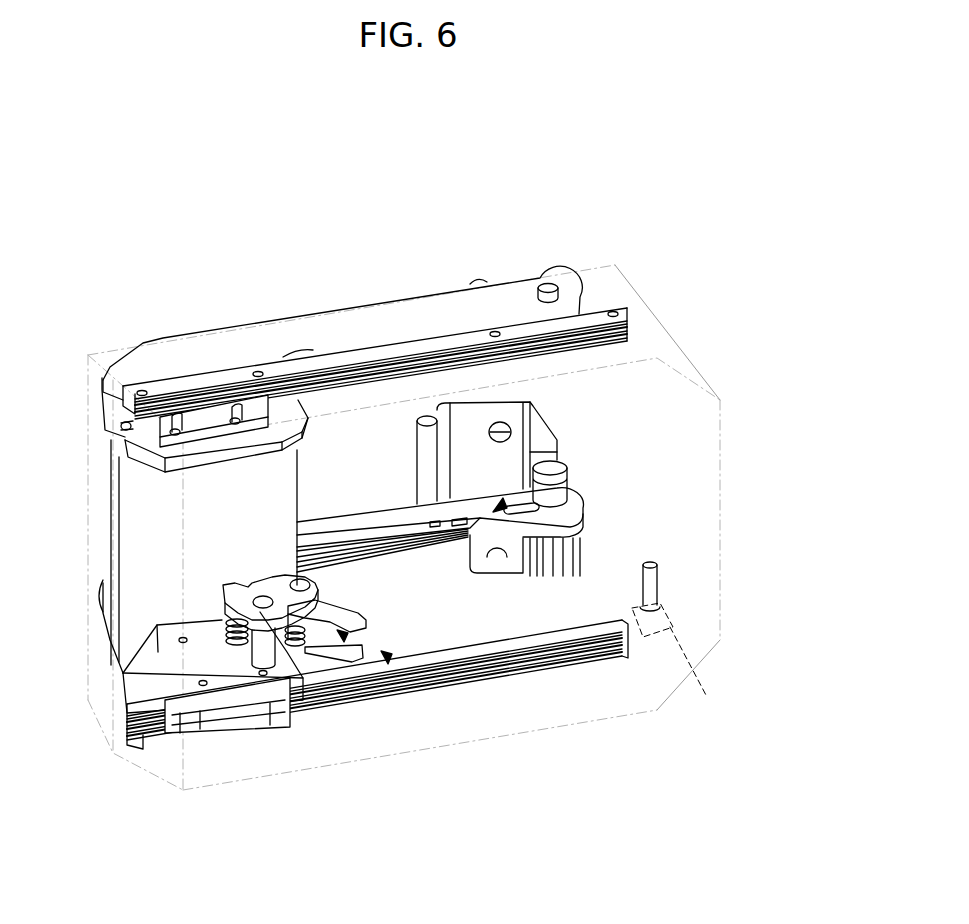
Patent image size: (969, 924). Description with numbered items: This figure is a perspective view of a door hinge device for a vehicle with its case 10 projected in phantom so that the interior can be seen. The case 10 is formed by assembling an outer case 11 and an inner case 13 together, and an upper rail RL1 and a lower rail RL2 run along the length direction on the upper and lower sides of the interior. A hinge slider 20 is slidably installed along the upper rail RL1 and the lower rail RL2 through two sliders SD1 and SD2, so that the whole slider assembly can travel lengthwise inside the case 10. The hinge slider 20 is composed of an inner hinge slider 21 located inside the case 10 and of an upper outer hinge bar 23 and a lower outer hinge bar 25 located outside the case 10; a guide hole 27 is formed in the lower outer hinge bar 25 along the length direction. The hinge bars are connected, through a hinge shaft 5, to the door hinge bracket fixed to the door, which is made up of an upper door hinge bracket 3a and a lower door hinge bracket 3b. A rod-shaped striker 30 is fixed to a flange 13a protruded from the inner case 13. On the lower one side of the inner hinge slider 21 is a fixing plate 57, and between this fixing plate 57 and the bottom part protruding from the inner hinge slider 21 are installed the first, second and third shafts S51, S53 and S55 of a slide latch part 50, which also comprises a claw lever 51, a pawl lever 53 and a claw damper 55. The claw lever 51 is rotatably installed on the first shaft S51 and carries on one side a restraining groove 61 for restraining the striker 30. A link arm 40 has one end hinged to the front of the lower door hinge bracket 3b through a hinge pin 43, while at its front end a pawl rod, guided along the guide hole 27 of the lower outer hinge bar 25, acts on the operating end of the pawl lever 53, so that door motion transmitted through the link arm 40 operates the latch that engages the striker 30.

The case 10 is at (439, 527).
The outer case 11 is at (670, 313).
The inner case 13 is at (429, 560).
The flange 13a is at (705, 677).
The hinge slider 20 is at (173, 521).
The inner hinge slider 21 is at (133, 500).
The upper outer hinge bar 23 is at (303, 330).
The lower outer hinge bar 25 is at (342, 522).
The guide hole 27 is at (584, 500).
The striker 30 is at (660, 583).
The upper door hinge bracket 3a is at (477, 280).
The lower door hinge bracket 3b is at (462, 423).
The link arm 40 is at (372, 540).
The hinge pin 43 is at (427, 417).
The hinge shaft 5 is at (546, 284).
The slide latch part 50 is at (387, 659).
The claw lever 51 is at (300, 650).
The pawl lever 53 is at (190, 640).
The claw damper 55 is at (264, 658).
The fixing plate 57 is at (253, 623).
The restraining groove 61 is at (342, 638).
The upper rail RL1 is at (593, 315).
The lower rail RL2 is at (552, 640).
The slider SD1 is at (148, 442).
The slider SD2 is at (175, 733).
The first shaft S51 is at (293, 582).
The second shaft S53 is at (260, 603).
The third shaft S55 is at (237, 645).